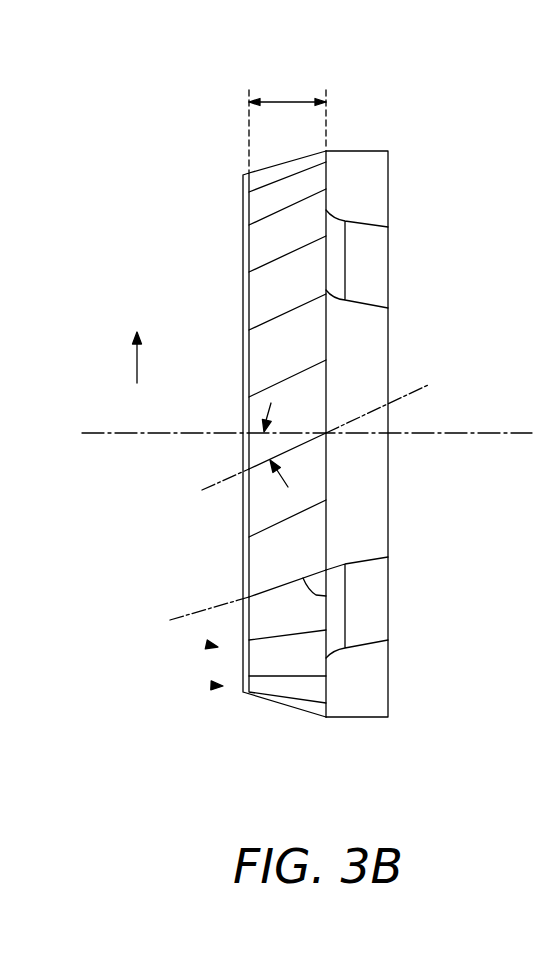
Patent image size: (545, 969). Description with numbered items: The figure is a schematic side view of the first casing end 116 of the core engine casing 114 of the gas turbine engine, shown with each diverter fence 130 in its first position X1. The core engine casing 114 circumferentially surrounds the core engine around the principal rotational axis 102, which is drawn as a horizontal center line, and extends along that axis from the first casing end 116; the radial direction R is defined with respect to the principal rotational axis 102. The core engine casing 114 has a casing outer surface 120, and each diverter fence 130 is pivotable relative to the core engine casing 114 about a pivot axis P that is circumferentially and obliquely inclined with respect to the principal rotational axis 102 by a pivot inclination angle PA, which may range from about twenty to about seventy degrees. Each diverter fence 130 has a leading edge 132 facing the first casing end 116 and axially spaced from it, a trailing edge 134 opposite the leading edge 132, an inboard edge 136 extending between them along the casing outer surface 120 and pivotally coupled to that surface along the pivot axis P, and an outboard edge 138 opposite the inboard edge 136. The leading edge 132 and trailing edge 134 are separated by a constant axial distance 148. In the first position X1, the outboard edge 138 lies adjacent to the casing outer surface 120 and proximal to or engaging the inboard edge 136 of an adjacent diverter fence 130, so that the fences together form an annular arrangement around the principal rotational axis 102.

The principal rotational axis 102 is at (512, 433).
The core engine casing 114 is at (373, 67).
The first casing end 116 is at (212, 685).
The casing outer surface 120 is at (367, 185).
The diverter fence 130 is at (273, 570).
The leading edge 132 is at (247, 577).
The trailing edge 134 is at (326, 519).
The inboard edge 136 is at (326, 595).
The outboard edge 138 is at (301, 510).
The constant axial distance 148 is at (287, 122).
The pivot axis P is at (410, 392).
The pivot inclination angle PA is at (264, 412).
The radial direction R is at (129, 359).
The first position X1 is at (208, 645).